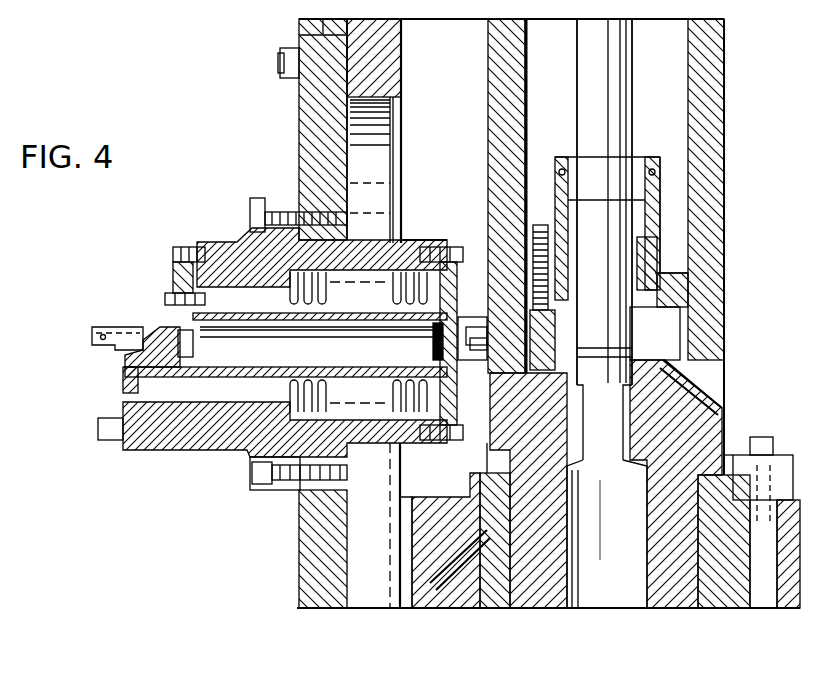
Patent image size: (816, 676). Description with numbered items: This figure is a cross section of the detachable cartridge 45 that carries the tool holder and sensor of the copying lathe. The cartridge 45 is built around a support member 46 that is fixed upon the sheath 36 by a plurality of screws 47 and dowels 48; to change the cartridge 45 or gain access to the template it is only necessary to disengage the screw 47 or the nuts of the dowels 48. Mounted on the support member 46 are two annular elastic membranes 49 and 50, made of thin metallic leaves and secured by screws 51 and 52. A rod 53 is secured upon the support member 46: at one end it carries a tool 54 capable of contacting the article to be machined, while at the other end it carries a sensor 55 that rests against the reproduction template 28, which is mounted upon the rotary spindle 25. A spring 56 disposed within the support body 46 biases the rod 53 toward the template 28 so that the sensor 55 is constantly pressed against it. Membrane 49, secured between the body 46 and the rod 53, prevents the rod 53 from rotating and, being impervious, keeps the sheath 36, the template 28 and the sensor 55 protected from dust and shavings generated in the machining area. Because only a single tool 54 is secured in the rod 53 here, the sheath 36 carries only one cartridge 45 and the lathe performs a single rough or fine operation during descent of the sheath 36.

The rotary spindle 25 is at (718, 418).
The reproduction template 28 is at (488, 48).
The sheath 36 is at (299, 103).
The cartridge 45 is at (441, 231).
The support member 46 is at (158, 452).
The screws 47 is at (282, 200).
The dowels 48 is at (282, 487).
The elastic membrane 49 is at (173, 283).
The elastic membrane 50 is at (438, 446).
The screws 51 is at (170, 250).
The screws 52 is at (165, 300).
The rod 53 is at (240, 357).
The tool 54 is at (76, 340).
The sensor 55 is at (478, 340).
The spring 56 is at (347, 412).